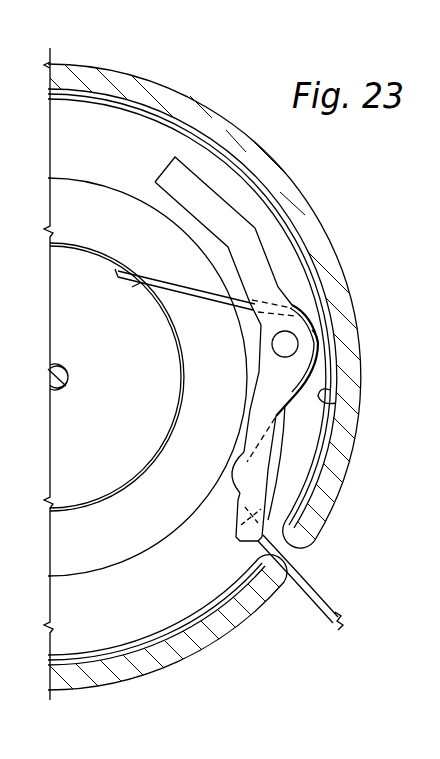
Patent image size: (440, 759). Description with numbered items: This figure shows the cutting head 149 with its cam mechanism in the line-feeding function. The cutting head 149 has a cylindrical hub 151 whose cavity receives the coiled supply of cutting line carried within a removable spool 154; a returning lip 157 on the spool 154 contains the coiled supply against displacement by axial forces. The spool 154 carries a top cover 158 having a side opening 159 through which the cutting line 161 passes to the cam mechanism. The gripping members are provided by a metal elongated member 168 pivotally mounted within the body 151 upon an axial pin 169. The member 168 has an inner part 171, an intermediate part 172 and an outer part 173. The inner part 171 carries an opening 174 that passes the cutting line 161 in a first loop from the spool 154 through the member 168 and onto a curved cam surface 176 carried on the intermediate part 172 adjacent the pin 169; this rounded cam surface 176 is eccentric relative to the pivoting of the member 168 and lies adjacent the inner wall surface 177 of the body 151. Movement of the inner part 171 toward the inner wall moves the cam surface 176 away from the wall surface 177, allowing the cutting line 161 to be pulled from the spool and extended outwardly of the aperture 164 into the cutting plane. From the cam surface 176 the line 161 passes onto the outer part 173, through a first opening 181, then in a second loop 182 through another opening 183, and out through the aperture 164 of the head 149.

The cutting head 149 is at (155, 75).
The cylindrical hub 151 is at (340, 290).
The removable spool 154 is at (84, 178).
The returning lip 157 is at (100, 547).
The top cover 158 is at (77, 258).
The side opening 159 is at (138, 288).
The cutting line 161 is at (310, 600).
The aperture 164 is at (300, 552).
The metal elongated member 168 is at (262, 233).
The axial pin 169 is at (272, 345).
The inner part 171 is at (235, 212).
The intermediate part 172 is at (312, 343).
The outer part 173 is at (263, 468).
The opening 174 is at (270, 302).
The curved cam surface 176 is at (322, 322).
The inner wall surface 177 is at (336, 403).
The first opening 181 is at (267, 450).
The second loop 182 is at (223, 480).
The another opening 183 is at (238, 522).